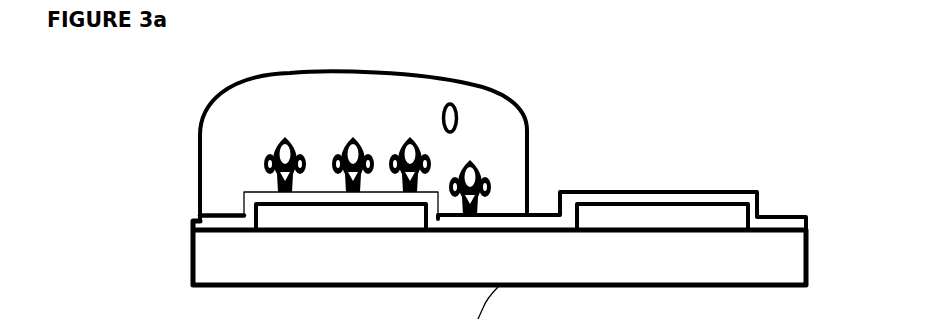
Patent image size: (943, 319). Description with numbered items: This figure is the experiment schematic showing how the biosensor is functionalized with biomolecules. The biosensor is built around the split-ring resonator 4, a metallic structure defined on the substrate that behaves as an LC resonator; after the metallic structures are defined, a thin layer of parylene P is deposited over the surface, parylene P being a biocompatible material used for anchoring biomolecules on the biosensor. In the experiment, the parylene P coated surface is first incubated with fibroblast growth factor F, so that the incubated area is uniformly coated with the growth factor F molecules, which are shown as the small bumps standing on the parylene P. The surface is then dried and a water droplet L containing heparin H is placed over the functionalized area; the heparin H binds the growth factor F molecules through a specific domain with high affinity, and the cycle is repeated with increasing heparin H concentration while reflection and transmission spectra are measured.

The water droplet L is at (528, 125).
The heparin H is at (458, 111).
The parylene P is at (243, 192).
The split-ring resonator 4 is at (327, 215).
The FGF-2 F is at (353, 137).